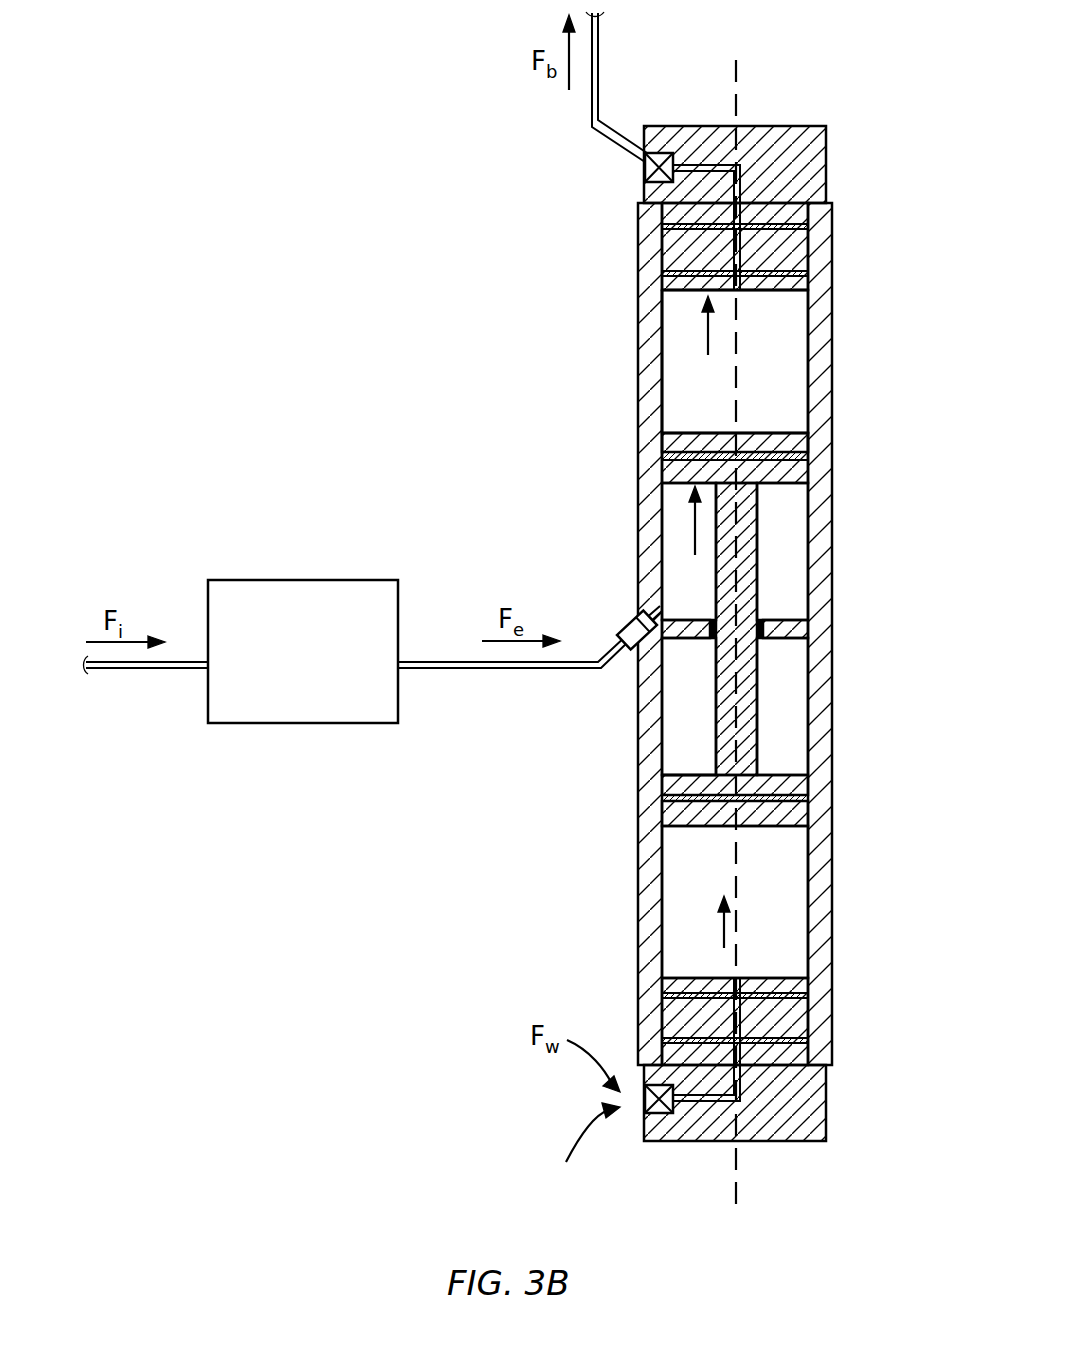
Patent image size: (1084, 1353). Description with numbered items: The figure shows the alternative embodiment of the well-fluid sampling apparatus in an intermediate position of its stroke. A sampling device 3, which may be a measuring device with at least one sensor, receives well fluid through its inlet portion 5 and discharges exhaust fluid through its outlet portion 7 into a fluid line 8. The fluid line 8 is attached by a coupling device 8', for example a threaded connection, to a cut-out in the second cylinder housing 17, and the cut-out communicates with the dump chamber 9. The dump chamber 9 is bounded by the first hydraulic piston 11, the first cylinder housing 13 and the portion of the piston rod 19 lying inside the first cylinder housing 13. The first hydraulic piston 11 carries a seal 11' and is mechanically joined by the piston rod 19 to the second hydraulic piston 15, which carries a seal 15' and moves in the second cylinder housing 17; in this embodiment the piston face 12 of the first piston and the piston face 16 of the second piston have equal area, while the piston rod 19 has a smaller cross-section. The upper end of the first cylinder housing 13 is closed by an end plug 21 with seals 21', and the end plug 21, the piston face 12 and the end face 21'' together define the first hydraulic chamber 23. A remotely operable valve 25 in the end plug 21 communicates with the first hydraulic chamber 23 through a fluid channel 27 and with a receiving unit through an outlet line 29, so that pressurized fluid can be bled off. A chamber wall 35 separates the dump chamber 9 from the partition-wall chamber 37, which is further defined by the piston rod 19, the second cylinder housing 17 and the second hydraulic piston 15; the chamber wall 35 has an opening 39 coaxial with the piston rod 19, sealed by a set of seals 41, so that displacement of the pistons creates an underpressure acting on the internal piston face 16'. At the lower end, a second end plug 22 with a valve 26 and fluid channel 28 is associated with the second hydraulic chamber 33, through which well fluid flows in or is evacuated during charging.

The sampling device 3 is at (265, 558).
The inlet portion 5 is at (205, 668).
The outlet portion 7 is at (400, 668).
The fluid line 8 is at (566, 676).
The coupling device 8' is at (617, 609).
The dump chamber 9 is at (805, 541).
The first hydraulic piston 11 is at (782, 458).
The seal 11' is at (784, 435).
The piston face 12 is at (710, 432).
The first cylinder housing 13 is at (640, 342).
The second hydraulic piston 15 is at (786, 774).
The seal 15' is at (793, 806).
The piston face 16 is at (698, 823).
The internal piston face 16' is at (645, 769).
The second cylinder housing 17 is at (830, 900).
The piston rod 19 is at (760, 745).
The end plug 21 is at (780, 208).
The seals 21' is at (788, 633).
The end face 21'' is at (735, 331).
The end plug 22 is at (826, 1100).
The first hydraulic chamber 23 is at (665, 392).
The valve 25 is at (660, 150).
The valve 26 is at (660, 1115).
The fluid channel 27 is at (742, 185).
The fluid channel 28 is at (700, 1100).
The outlet line 29 is at (598, 43).
The second hydraulic chamber 33 is at (805, 930).
The chamber wall 35 is at (775, 645).
The partition-wall chamber 37 is at (800, 668).
The opening 39 is at (732, 642).
The seals 41 is at (715, 620).